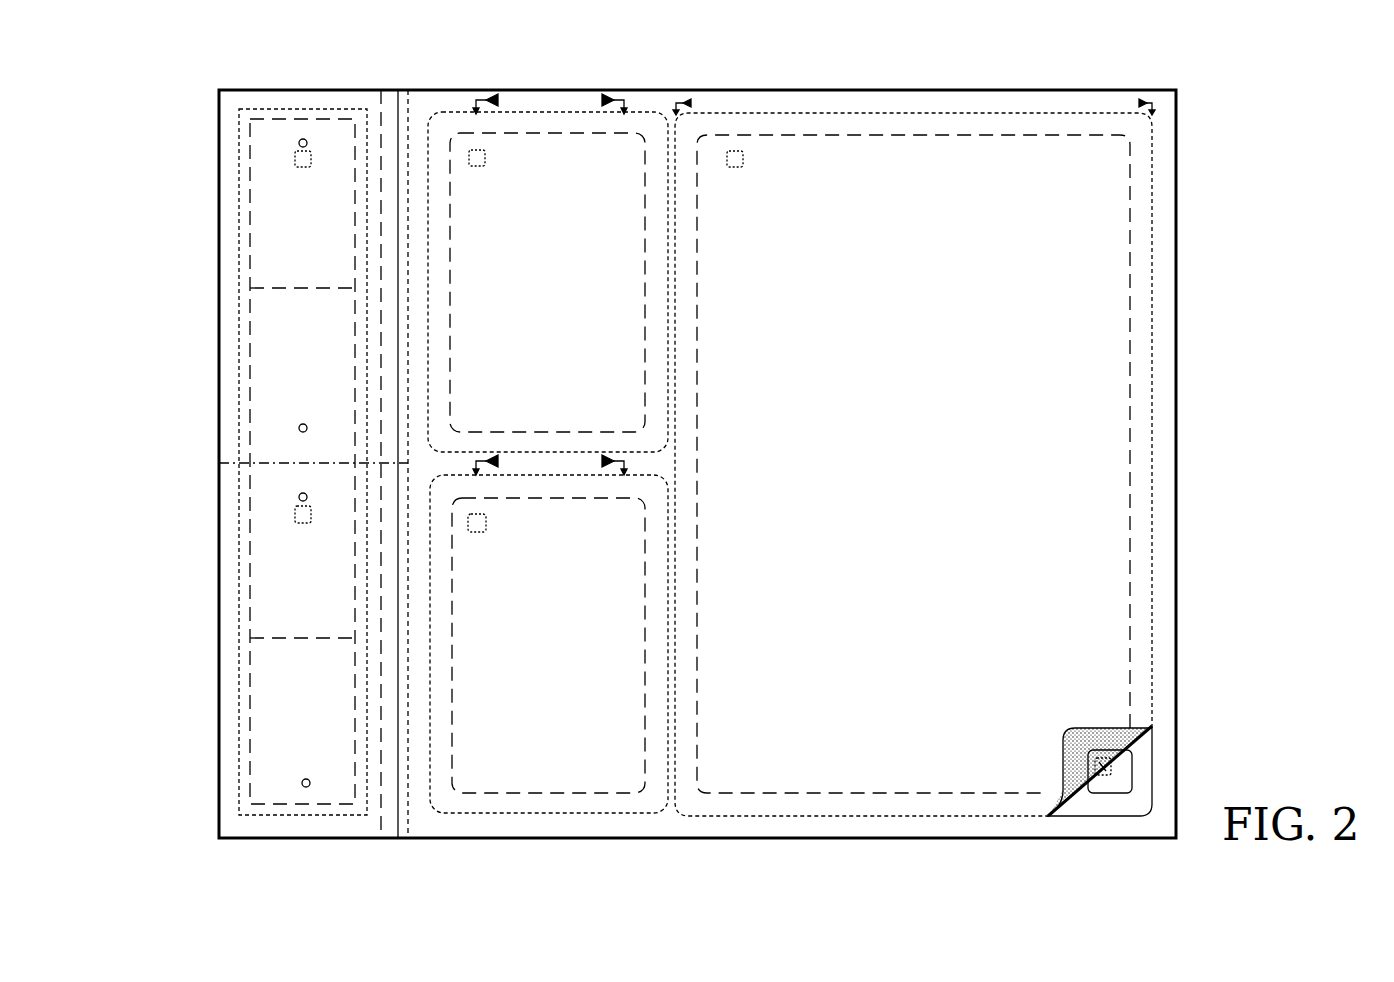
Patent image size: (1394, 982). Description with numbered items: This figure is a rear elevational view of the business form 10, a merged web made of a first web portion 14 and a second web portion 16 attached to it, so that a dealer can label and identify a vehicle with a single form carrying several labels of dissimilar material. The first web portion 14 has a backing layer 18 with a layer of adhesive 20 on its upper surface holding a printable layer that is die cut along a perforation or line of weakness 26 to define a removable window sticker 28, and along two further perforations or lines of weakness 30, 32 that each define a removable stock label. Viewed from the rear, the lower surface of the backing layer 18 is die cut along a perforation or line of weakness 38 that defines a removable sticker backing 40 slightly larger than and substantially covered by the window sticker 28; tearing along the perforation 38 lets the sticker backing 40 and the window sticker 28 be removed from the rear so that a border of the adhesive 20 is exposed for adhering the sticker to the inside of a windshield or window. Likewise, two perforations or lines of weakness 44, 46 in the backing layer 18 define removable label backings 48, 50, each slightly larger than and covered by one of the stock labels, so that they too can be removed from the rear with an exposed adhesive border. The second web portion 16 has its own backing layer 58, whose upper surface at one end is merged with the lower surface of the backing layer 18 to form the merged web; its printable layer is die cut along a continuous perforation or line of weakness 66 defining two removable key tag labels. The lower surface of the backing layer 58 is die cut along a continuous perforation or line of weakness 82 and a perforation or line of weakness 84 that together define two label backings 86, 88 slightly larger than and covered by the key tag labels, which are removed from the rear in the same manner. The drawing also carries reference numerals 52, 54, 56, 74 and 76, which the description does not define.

The business form 10 is at (703, 56).
The first web portion 14 is at (861, 66).
The second web portion 16 is at (286, 68).
The backing layer 18 is at (418, 103).
The layer of adhesive 20 is at (1103, 730).
The perforation or line of weakness 26 is at (942, 135).
The window sticker 28 is at (1100, 760).
The perforation or line of weakness 30 is at (549, 133).
The perforation or line of weakness 32 is at (528, 499).
The perforation or line of weakness 38 is at (1036, 113).
The sticker backing 40 is at (1112, 301).
The perforation or line of weakness 44 is at (631, 112).
The perforation or line of weakness 46 is at (585, 476).
The label backing 48 is at (598, 123).
The label backing 50 is at (442, 746).
The punch hole 52 is at (737, 152).
The punch hole 54 is at (476, 154).
The punch hole 56 is at (480, 532).
The backing layer 58 is at (231, 103).
The continuous perforation or line of weakness 66 is at (321, 118).
The perforation line 74 is at (285, 295).
The perforation line 76 is at (285, 642).
The continuous perforation or line of weakness 82 is at (239, 215).
The perforation or line of weakness 84 is at (285, 466).
The label backing 86 is at (250, 393).
The label backing 88 is at (250, 569).